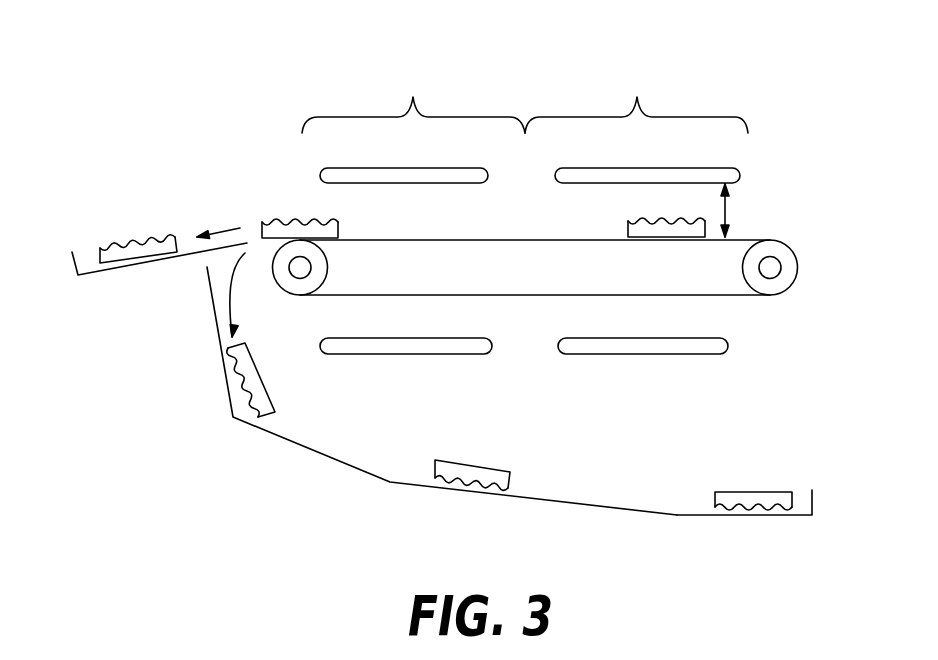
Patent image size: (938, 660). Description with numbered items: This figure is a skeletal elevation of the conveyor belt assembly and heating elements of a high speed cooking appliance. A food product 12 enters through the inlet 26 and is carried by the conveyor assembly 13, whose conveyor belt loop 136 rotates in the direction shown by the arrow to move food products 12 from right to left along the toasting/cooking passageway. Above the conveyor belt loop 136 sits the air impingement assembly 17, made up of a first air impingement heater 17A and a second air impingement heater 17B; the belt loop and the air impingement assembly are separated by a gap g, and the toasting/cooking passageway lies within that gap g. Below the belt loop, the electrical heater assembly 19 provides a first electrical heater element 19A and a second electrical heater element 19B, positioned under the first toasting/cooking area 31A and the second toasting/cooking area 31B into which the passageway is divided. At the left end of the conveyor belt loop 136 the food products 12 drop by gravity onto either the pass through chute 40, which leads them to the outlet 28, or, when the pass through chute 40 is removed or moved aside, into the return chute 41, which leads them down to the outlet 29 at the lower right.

The food product 12 is at (152, 240).
The conveyor assembly 13 is at (807, 260).
The conveyor belt loop 136 is at (783, 290).
The air impingement assembly 17 is at (461, 154).
The first air impingement heater 17A is at (630, 168).
The second air impingement heater 17B is at (412, 168).
The electrical heater assembly 19 is at (587, 380).
The first electrical heater element 19A is at (640, 354).
The second electrical heater element 19B is at (435, 354).
The inlet 26 is at (765, 183).
The outlet 28 is at (137, 225).
The outlet 29 is at (803, 480).
The first toasting/cooking area 31A is at (638, 90).
The second toasting/cooking area 31B is at (415, 88).
The pass through chute 40 is at (148, 262).
The return chute 41 is at (300, 453).
The gap g is at (725, 208).